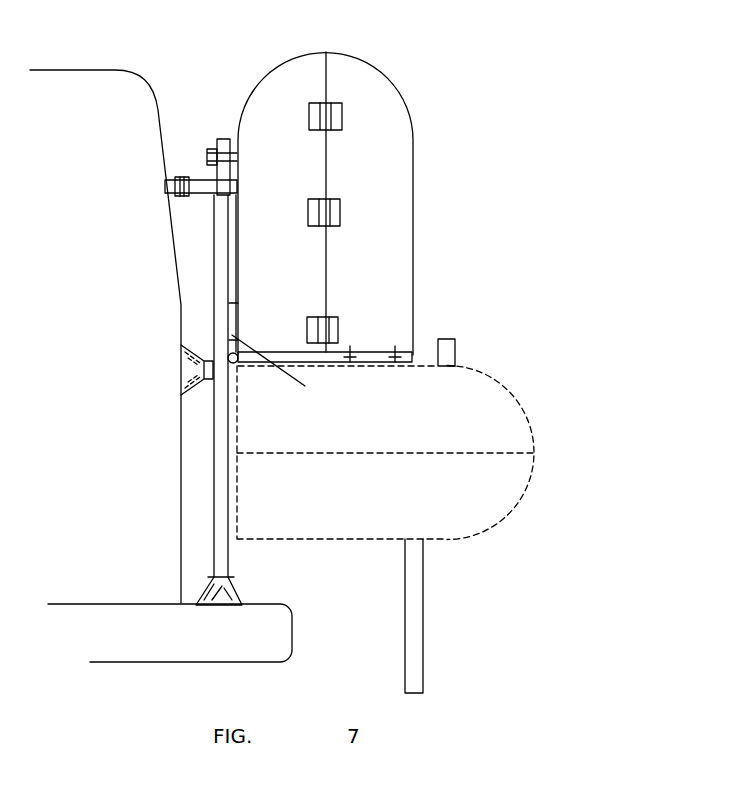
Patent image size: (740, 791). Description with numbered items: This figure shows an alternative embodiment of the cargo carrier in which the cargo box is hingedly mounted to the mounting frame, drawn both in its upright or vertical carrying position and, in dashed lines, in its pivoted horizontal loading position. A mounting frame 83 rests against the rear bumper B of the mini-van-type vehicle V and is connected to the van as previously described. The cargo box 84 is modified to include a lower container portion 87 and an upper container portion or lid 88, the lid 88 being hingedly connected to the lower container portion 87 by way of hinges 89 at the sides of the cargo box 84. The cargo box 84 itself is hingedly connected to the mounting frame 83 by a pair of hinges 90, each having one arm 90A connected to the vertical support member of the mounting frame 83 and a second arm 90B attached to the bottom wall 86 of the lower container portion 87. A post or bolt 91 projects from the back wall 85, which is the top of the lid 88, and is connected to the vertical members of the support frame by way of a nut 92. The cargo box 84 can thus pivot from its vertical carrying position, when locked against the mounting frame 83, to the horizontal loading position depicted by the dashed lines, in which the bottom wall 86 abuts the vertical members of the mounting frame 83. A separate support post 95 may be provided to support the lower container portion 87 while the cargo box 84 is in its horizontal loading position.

The mini-van-type vehicle V is at (113, 96).
The rear bumper B is at (290, 661).
The mounting frame 83 is at (222, 510).
The cargo box 84 is at (415, 188).
The back wall 85 is at (235, 250).
The bottom wall 86 is at (393, 363).
The lower container portion 87 is at (350, 80).
The lid 88 is at (313, 60).
The hinges 89 is at (342, 127).
The hinges 90 is at (240, 368).
The arm 90A is at (288, 371).
The second arm 90B is at (318, 360).
The post or bolt 91 is at (238, 140).
The nut 92 is at (213, 147).
The support post 95 is at (418, 648).